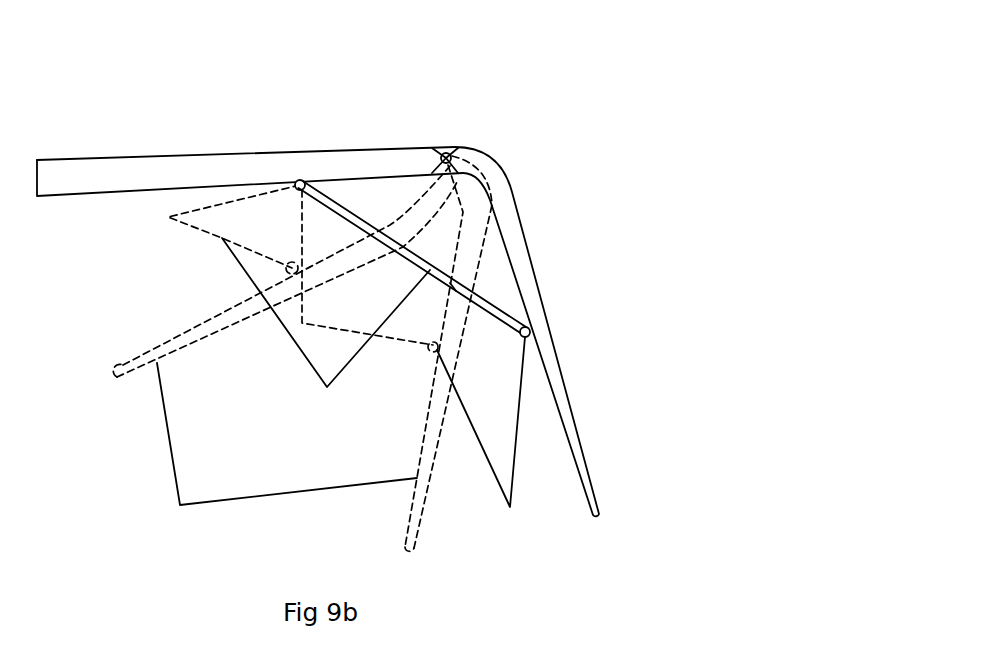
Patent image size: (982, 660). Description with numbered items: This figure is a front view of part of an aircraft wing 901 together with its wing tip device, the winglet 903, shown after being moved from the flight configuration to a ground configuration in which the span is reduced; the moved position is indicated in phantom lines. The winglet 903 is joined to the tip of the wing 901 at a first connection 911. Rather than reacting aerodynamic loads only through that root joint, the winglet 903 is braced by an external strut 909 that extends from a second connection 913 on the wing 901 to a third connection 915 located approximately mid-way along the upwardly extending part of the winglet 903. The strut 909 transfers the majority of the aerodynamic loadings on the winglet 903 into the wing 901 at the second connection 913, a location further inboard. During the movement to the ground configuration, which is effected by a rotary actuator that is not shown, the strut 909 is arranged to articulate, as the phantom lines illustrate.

The wing 901 is at (105, 170).
The winglet 903 is at (538, 278).
The strut 909 is at (337, 332).
The first connection 911 is at (446, 153).
The second connection 913 is at (300, 180).
The third connection 915 is at (484, 436).